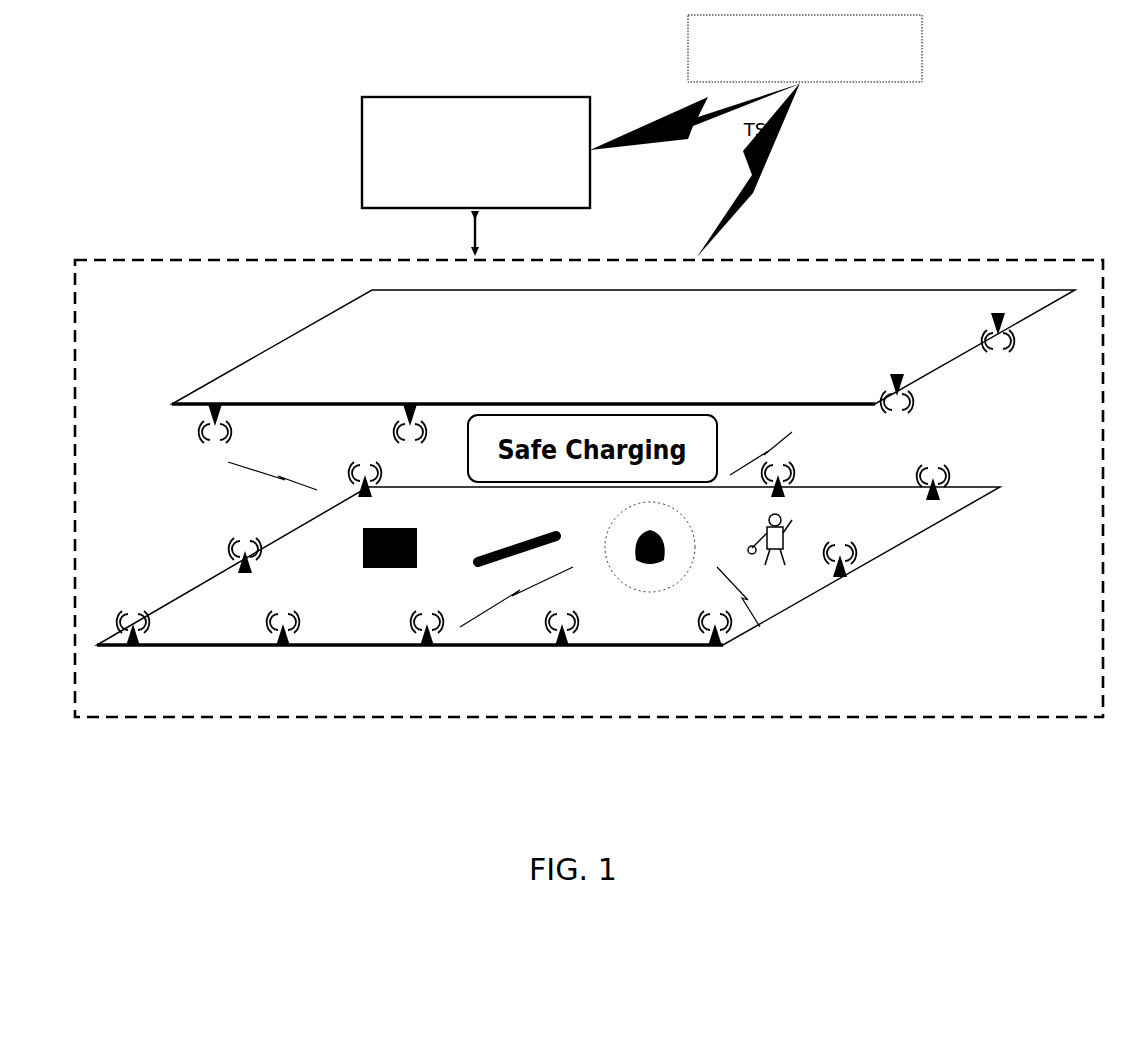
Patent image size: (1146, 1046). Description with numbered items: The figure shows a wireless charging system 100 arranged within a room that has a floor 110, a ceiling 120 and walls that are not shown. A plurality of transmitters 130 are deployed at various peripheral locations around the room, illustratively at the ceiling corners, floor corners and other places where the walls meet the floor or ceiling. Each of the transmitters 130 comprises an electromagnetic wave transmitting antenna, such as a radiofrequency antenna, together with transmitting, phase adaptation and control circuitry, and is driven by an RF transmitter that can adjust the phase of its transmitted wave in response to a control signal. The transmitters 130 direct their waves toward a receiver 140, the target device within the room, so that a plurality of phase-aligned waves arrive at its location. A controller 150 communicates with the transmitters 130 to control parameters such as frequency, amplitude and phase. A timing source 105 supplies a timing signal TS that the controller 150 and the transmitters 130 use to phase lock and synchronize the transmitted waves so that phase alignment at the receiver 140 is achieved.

The wireless charging system 100 is at (1124, 758).
The timing source 105 is at (805, 48).
The floor 110 is at (623, 347).
The ceiling 120 is at (548, 566).
The transmitters 130 is at (221, 402).
The receiver 140 is at (640, 570).
The controller 150 is at (476, 152).